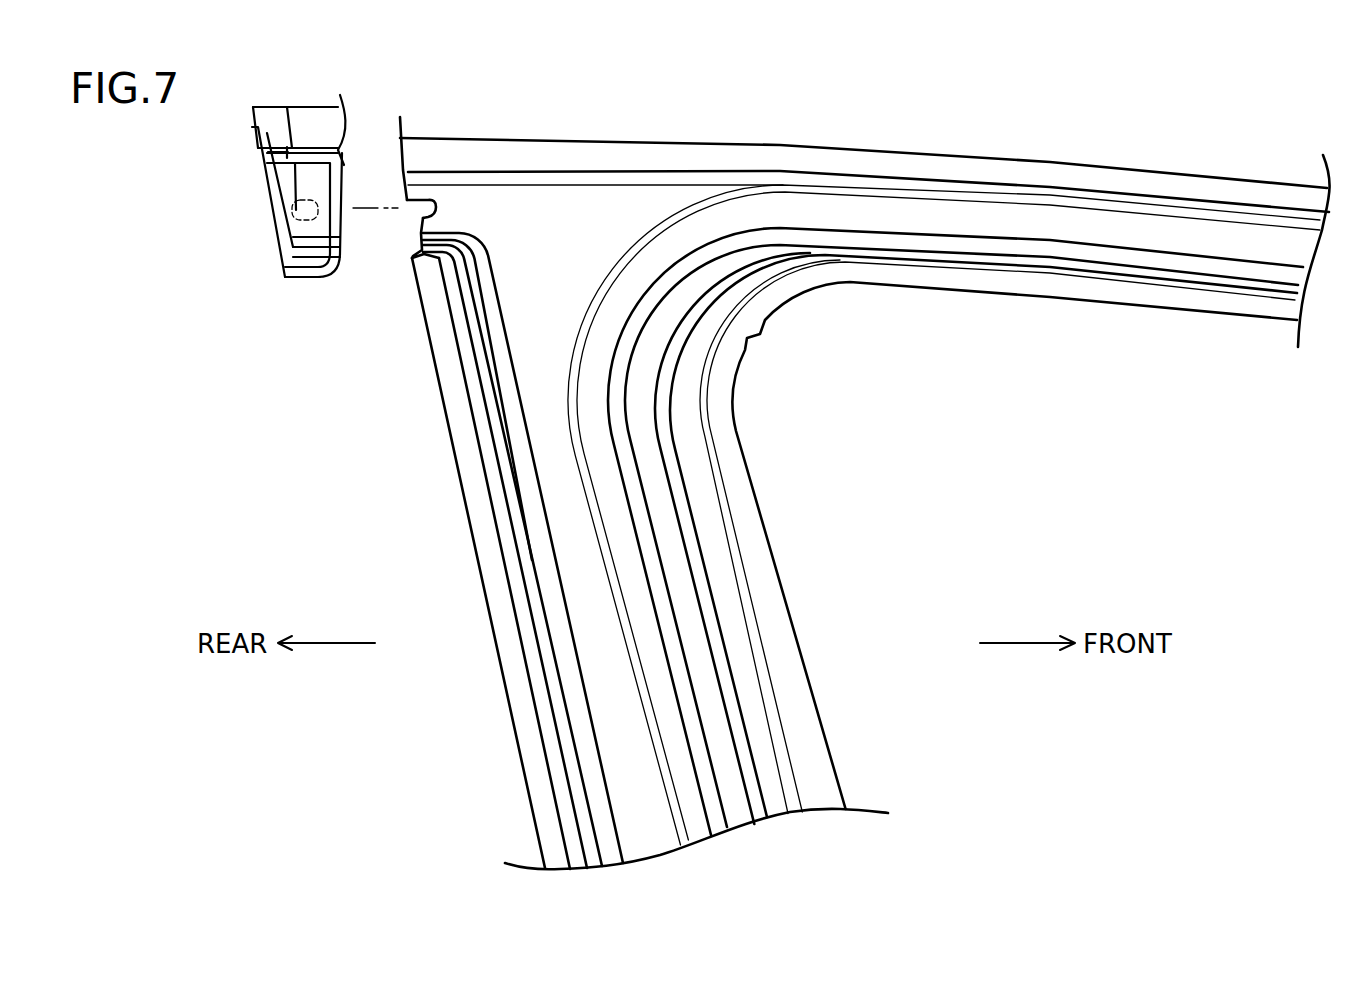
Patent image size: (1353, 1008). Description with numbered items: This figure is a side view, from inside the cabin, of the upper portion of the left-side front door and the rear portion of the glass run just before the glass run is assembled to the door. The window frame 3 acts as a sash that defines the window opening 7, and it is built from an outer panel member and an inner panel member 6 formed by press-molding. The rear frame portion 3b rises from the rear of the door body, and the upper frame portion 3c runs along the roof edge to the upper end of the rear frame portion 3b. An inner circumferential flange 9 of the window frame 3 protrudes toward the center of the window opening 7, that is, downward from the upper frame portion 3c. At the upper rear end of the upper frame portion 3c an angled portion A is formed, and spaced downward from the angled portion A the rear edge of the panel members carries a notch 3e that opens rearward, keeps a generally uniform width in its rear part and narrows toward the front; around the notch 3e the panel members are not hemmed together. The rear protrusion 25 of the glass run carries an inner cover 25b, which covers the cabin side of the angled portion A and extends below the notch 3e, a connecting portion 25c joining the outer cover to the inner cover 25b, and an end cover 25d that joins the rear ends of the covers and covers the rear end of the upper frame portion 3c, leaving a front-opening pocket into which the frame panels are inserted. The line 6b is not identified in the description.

The window frame 3 is at (1177, 173).
The rear frame portion 3b is at (612, 731).
The upper frame portion 3c is at (1115, 227).
The notch 3e is at (413, 210).
The inner panel member 6 is at (580, 215).
The trim edge portion 6b is at (852, 276).
The window opening 7 is at (973, 292).
The inner circumferential flange 9 is at (920, 276).
The rear protrusion 25 is at (255, 188).
The inner cover 25b is at (307, 232).
The connecting portion 25c is at (295, 213).
The end cover 25d is at (295, 190).
The angled portion A is at (400, 140).